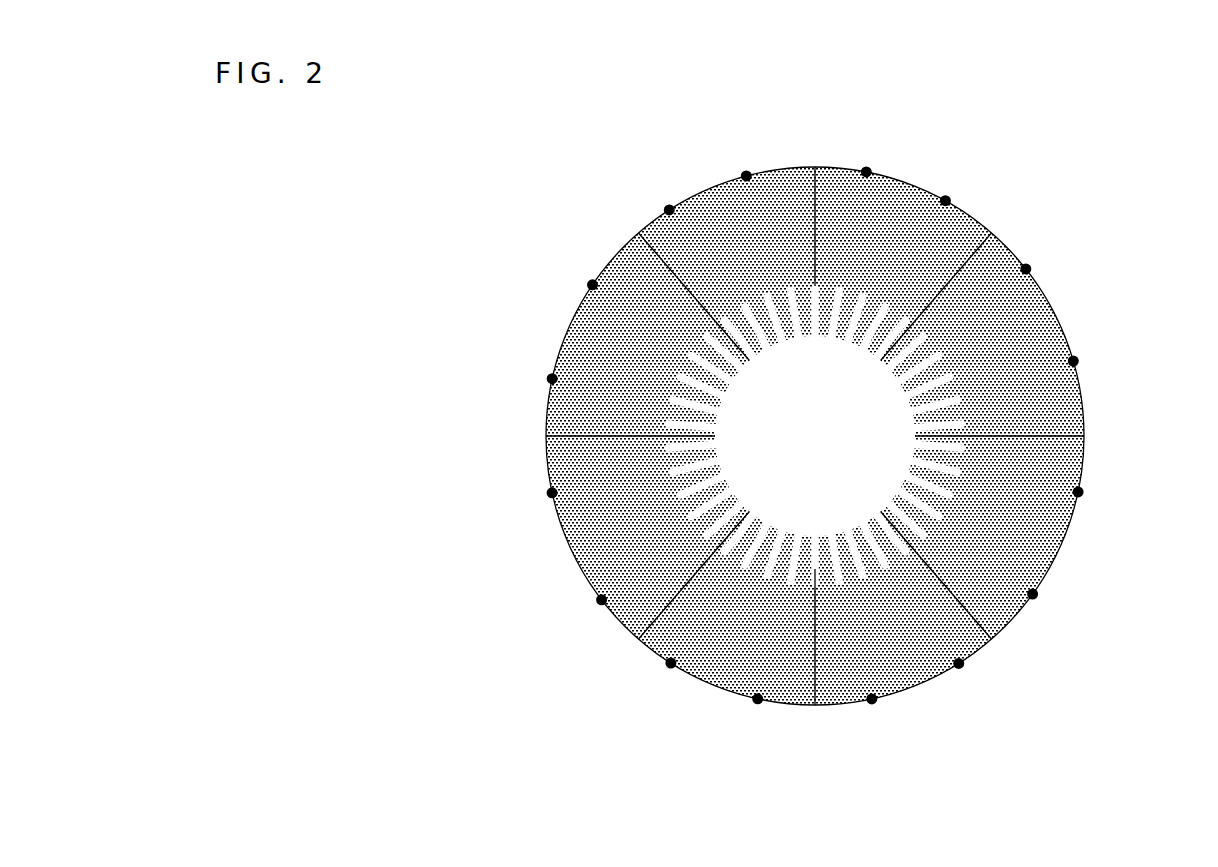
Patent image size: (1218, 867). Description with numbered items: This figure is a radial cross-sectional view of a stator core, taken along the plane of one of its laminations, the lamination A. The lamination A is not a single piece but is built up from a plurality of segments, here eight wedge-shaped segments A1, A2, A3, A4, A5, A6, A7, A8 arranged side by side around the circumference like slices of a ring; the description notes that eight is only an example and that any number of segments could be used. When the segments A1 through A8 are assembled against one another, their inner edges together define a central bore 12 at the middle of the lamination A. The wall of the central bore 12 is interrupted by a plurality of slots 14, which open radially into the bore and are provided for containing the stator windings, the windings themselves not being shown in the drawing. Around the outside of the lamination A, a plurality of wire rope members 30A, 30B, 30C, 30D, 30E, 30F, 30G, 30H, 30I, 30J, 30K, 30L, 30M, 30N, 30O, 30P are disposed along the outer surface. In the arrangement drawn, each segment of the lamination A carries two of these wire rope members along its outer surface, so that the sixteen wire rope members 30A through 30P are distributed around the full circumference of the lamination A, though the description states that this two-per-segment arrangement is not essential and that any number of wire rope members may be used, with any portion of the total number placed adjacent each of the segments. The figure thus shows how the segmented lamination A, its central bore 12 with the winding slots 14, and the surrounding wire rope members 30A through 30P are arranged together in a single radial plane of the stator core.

The central bore 12 is at (803, 445).
The slots 14 is at (844, 345).
The lamination A is at (1013, 235).
The segment A1 is at (858, 251).
The segment A2 is at (997, 371).
The segment A3 is at (988, 532).
The segment A4 is at (866, 634).
The segment A5 is at (730, 634).
The segment A6 is at (616, 534).
The segment A7 is at (606, 371).
The segment A8 is at (728, 251).
The wire rope member 30A is at (866, 172).
The wire rope member 30B is at (945, 201).
The wire rope member 30C is at (1026, 269).
The wire rope member 30D is at (1073, 361).
The wire rope member 30E is at (1078, 492).
The wire rope member 30F is at (1033, 594).
The wire rope member 30G is at (959, 663).
The wire rope member 30H is at (872, 699).
The wire rope member 30I is at (758, 699).
The wire rope member 30J is at (671, 663).
The wire rope member 30K is at (602, 600).
The wire rope member 30L is at (552, 493).
The wire rope member 30M is at (552, 379).
The wire rope member 30N is at (592, 285).
The wire rope member 30O is at (669, 210).
The wire rope member 30P is at (746, 176).